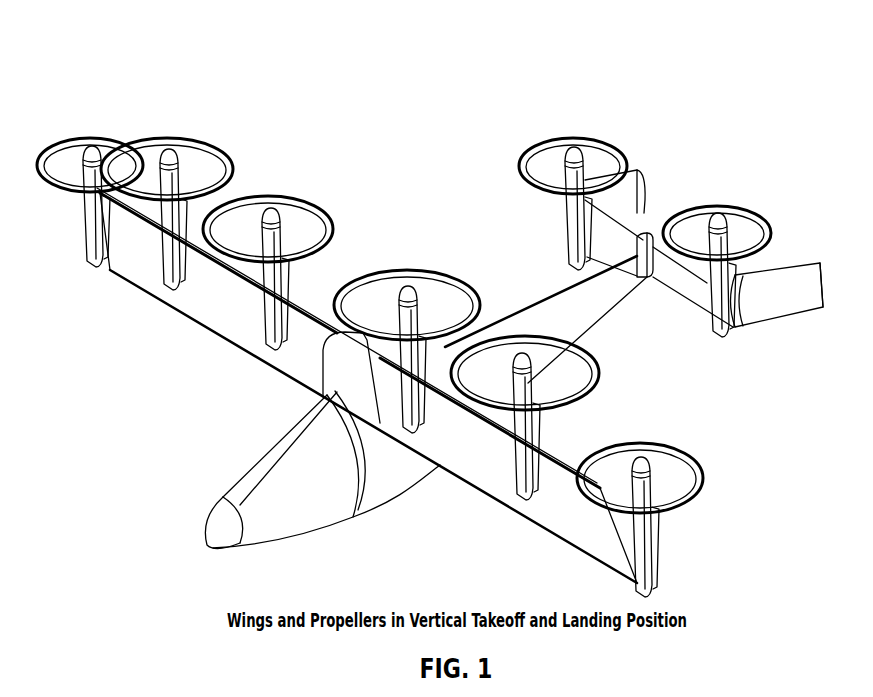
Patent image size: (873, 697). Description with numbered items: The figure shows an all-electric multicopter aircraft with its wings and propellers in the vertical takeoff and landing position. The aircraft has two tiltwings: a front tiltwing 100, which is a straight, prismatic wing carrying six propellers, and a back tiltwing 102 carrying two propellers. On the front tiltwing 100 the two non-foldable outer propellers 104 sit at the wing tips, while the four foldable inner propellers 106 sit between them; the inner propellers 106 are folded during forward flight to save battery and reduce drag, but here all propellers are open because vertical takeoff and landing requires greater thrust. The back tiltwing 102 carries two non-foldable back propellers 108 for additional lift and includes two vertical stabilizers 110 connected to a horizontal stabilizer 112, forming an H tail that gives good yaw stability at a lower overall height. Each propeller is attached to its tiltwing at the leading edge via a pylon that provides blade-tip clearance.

The front tiltwing 100 is at (153, 290).
The back tiltwing 102 is at (783, 303).
The non-foldable outer propeller 104 is at (98, 136).
The foldable inner propeller 106 is at (192, 138).
The non-foldable back propeller 108 is at (570, 137).
The vertical stabilizer 110 is at (640, 170).
The horizontal stabilizer 112 is at (677, 280).